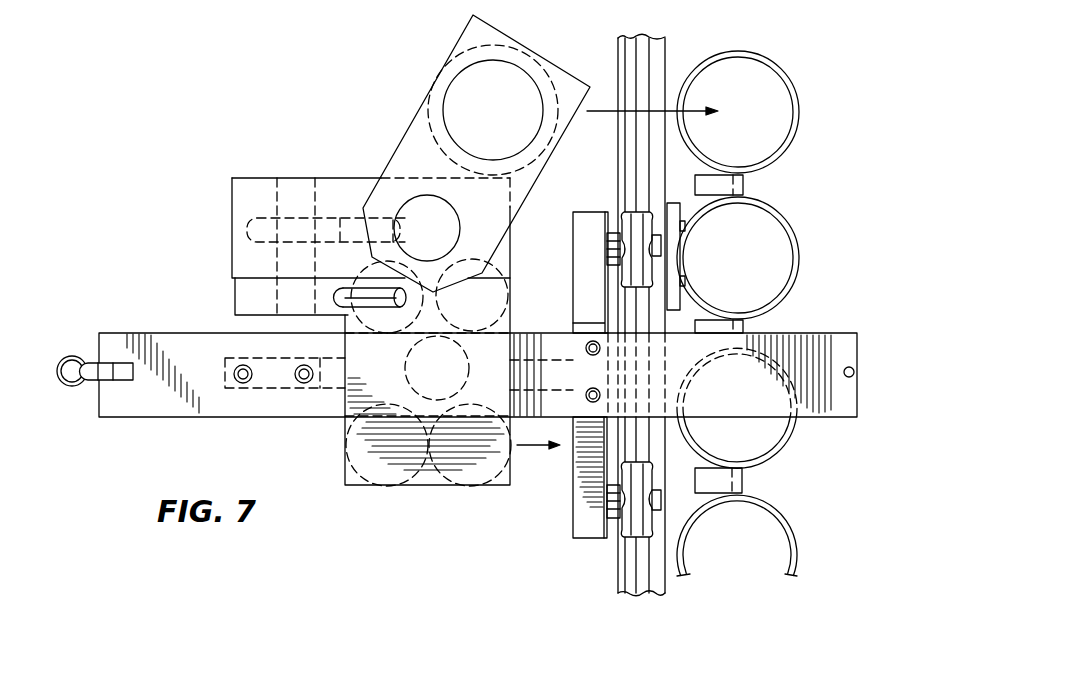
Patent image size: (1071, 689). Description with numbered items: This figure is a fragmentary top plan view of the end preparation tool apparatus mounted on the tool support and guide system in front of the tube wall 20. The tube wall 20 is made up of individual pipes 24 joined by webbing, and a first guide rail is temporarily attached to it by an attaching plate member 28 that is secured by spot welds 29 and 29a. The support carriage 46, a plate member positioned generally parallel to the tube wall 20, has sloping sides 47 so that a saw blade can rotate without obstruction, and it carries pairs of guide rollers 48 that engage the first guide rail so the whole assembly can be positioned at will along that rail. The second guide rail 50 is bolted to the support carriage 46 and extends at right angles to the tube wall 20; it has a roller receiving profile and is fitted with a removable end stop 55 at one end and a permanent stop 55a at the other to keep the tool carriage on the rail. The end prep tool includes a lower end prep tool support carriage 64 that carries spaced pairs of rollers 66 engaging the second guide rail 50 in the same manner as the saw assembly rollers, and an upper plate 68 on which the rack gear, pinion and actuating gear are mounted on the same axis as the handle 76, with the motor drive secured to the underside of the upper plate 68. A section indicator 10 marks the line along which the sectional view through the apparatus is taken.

The section line 10- 10 is at (425, 262).
The tube wall 20 is at (765, 305).
The pipe 24 is at (783, 69).
The attaching plate member 28 is at (673, 267).
The spot weld 29 is at (684, 224).
The spot weld 29a is at (668, 197).
The support carriage 46 is at (582, 492).
The sloping sides 47 is at (577, 245).
The guide rollers 48 is at (633, 212).
The second guide rail 50 is at (120, 336).
The removable end stop 55 is at (92, 381).
The permanent stop 55a is at (850, 367).
The lower end prep tool support carriage 64 is at (352, 393).
The rollers 66 is at (428, 372).
The upper plate 68 is at (402, 144).
The handle 76 is at (377, 300).